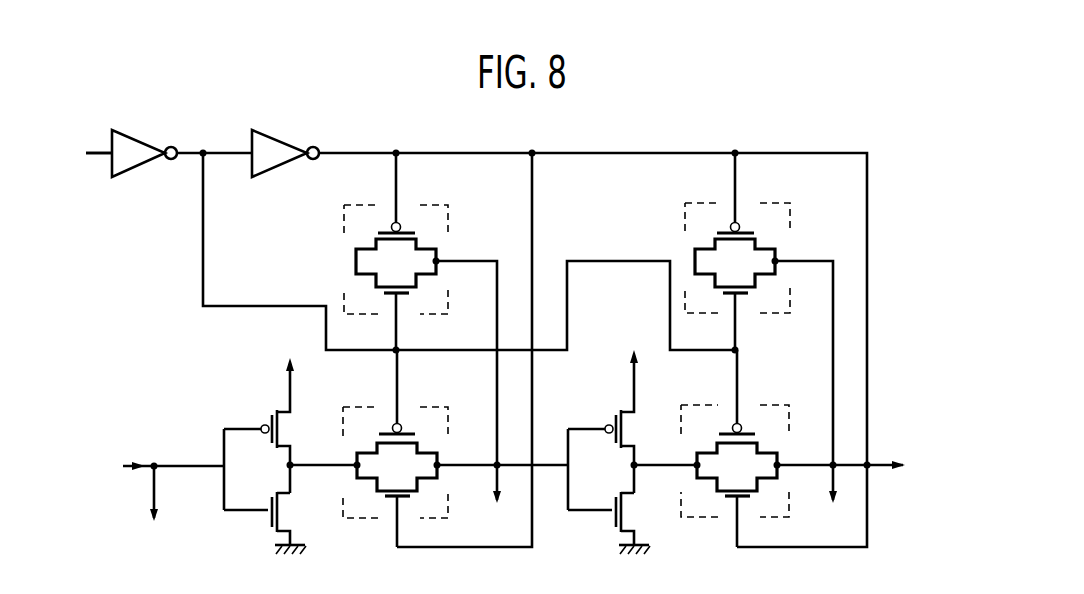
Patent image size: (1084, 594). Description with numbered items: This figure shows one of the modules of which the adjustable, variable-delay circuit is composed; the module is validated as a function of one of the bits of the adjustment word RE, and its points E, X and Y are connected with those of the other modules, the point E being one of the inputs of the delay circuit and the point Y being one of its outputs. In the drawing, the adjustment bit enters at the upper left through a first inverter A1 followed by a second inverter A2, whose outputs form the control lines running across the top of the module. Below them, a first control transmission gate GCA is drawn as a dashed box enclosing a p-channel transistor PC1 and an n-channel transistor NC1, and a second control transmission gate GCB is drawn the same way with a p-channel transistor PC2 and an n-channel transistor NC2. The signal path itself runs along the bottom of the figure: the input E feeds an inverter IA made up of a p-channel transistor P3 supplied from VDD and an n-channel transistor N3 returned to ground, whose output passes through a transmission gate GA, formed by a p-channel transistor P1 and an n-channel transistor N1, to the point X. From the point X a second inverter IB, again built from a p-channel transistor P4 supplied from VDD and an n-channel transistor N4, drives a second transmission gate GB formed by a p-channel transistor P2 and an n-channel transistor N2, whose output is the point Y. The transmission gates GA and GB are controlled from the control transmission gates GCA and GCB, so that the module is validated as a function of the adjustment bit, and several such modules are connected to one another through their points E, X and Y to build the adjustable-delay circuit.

The first inverter A1 is at (141, 165).
The second inverter A2 is at (284, 165).
The first control transmission gate GCA is at (344, 230).
The p-channel transistor of control gate GCA PC1 is at (432, 228).
The n-channel transistor of control gate GCA NC1 is at (432, 294).
The second control transmission gate GCB is at (683, 210).
The p-channel transistor of control gate GCB PC2 is at (770, 226).
The n-channel transistor of control gate GCB NC2 is at (805, 314).
The first transmission gate GA is at (340, 524).
The p-channel transistor of gate GA P1 is at (432, 432).
The n-channel transistor of gate GA N1 is at (432, 500).
The second transmission gate GB is at (707, 518).
The p-channel transistor of gate GB P2 is at (772, 428).
The n-channel transistor of gate GB N2 is at (772, 500).
The first CMOS inverter IA is at (249, 530).
The p-channel transistor of inverter IA P3 is at (296, 439).
The n-channel transistor of inverter IA N3 is at (294, 518).
The second CMOS inverter IB is at (601, 522).
The p-channel transistor of inverter IB P4 is at (636, 420).
The n-channel transistor of inverter IB N4 is at (636, 515).
The supply voltage VDD is at (287, 382).
The input point E is at (156, 489).
The intermediate point X is at (500, 468).
The output point Y is at (852, 472).